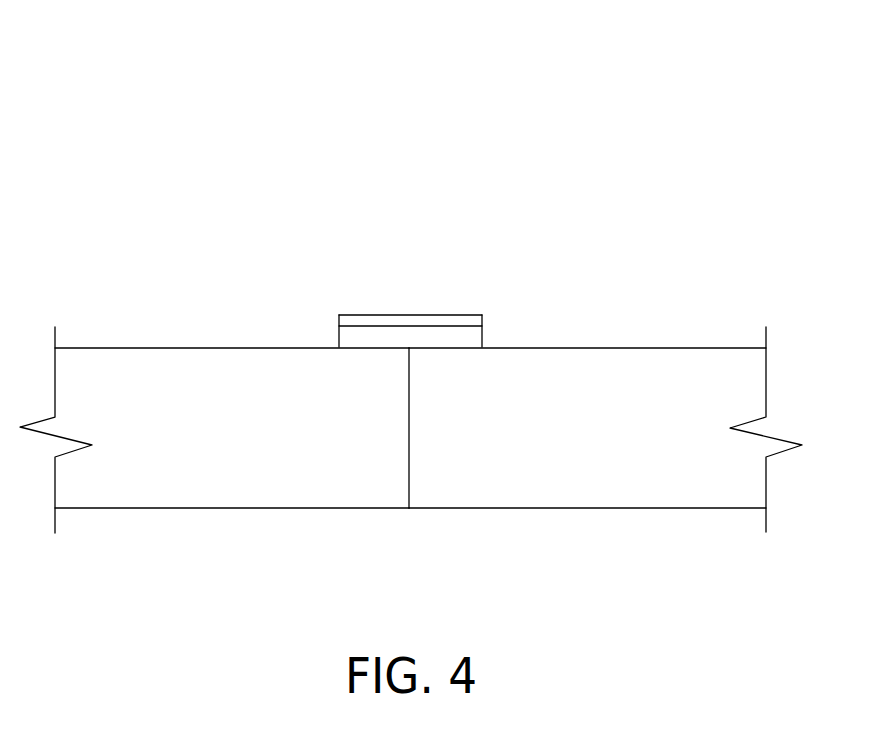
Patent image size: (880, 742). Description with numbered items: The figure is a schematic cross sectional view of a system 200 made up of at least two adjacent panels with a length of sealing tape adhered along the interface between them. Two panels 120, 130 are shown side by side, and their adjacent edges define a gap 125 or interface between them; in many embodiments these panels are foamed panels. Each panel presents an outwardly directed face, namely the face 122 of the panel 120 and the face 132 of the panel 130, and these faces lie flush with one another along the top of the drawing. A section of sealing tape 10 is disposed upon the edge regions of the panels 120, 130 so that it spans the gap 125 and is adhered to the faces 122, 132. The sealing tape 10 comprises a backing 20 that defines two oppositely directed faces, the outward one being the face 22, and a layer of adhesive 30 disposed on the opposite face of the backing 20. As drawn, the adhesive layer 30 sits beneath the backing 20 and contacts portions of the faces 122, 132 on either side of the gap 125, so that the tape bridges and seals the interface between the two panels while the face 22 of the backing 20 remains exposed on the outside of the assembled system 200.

The system 200 is at (704, 139).
The sealing tape 10 is at (504, 295).
The backing 20 is at (350, 320).
The face 22 is at (435, 315).
The adhesive layer 30 is at (470, 335).
The panel 120 is at (160, 478).
The face 122 is at (178, 348).
The gap 125 is at (409, 515).
The panel 130 is at (627, 478).
The face 132 is at (677, 348).